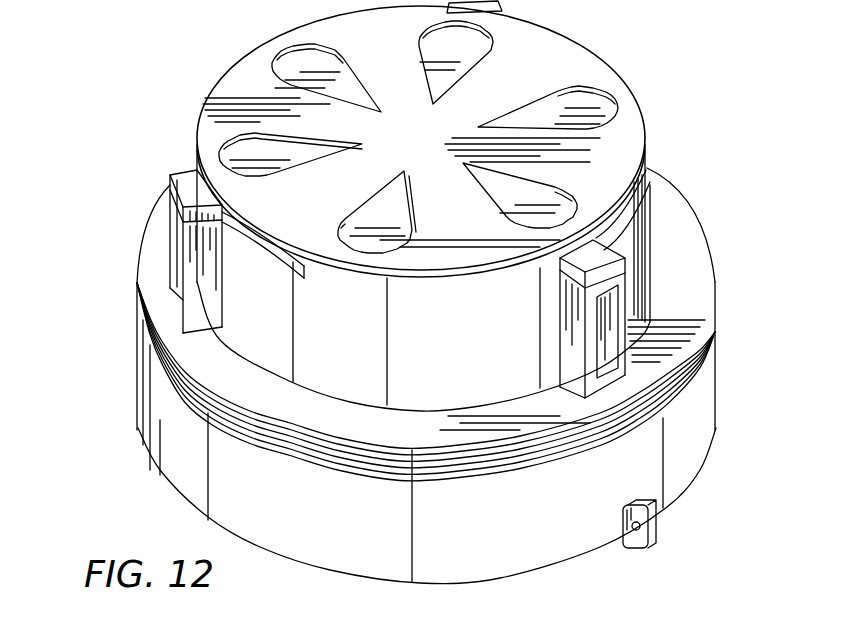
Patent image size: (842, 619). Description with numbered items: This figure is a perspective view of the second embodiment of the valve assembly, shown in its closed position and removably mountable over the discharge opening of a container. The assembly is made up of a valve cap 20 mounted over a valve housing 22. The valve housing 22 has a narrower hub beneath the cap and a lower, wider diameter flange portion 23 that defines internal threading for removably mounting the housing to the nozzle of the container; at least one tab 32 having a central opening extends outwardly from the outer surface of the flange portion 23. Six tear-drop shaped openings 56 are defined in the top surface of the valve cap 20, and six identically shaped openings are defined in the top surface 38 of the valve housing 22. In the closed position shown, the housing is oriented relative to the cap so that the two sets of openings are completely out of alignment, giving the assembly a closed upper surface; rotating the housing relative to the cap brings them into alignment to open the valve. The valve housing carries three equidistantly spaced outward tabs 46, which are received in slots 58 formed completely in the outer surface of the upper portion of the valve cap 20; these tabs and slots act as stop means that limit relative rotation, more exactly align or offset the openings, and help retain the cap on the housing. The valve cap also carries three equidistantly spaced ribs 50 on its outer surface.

The valve cap 20 is at (308, 352).
The valve housing 22 is at (690, 491).
The flange portion 23 is at (334, 412).
The tab 32 is at (657, 541).
The top surface 38 is at (622, 146).
The tabs 46 is at (612, 249).
The ribs 50 is at (625, 312).
The tear-drop shaped openings 56 is at (578, 110).
The slots 58 is at (283, 267).